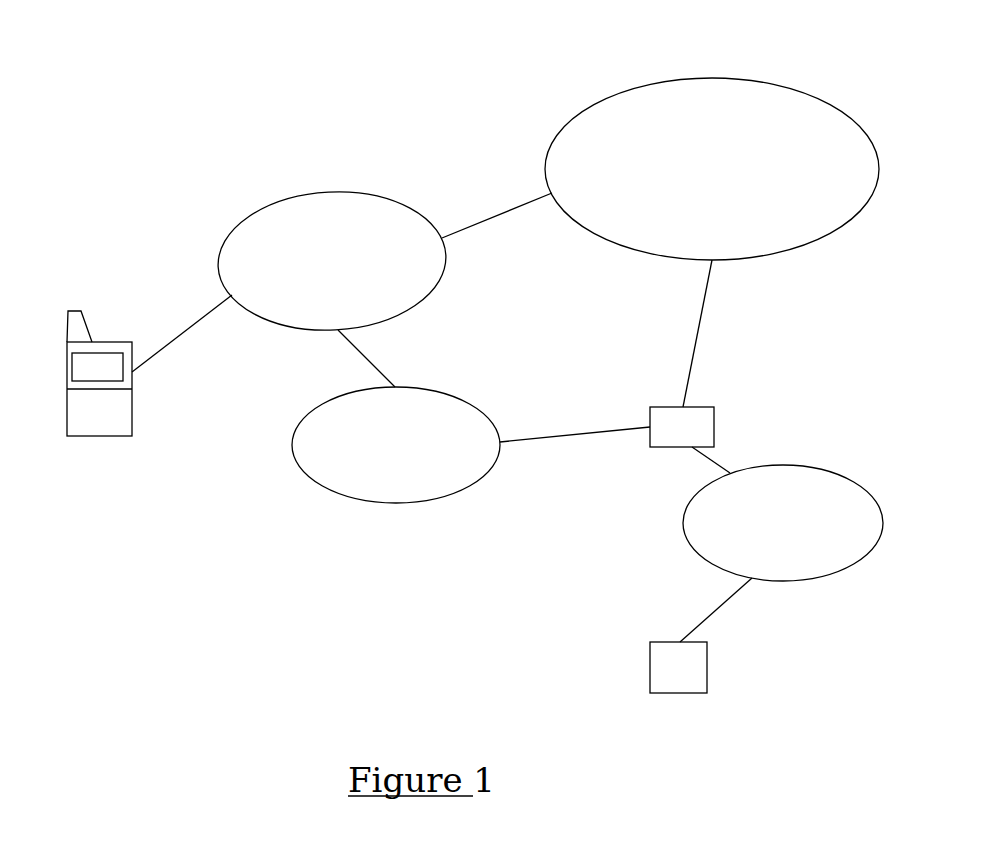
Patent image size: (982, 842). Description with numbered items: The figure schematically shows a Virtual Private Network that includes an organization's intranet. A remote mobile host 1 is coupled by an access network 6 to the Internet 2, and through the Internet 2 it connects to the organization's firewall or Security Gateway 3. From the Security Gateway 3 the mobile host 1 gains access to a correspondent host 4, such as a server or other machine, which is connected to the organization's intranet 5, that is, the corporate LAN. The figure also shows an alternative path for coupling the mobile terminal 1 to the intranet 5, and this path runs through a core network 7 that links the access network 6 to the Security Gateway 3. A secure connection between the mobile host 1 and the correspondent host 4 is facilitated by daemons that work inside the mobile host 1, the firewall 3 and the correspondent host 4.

The mobile host 1 is at (100, 436).
The Internet 2 is at (573, 122).
The Security Gateway 3 is at (660, 407).
The correspondent host 4 is at (650, 665).
The intranet 5 is at (787, 463).
The access network 6 is at (270, 200).
The core network 7 is at (337, 493).